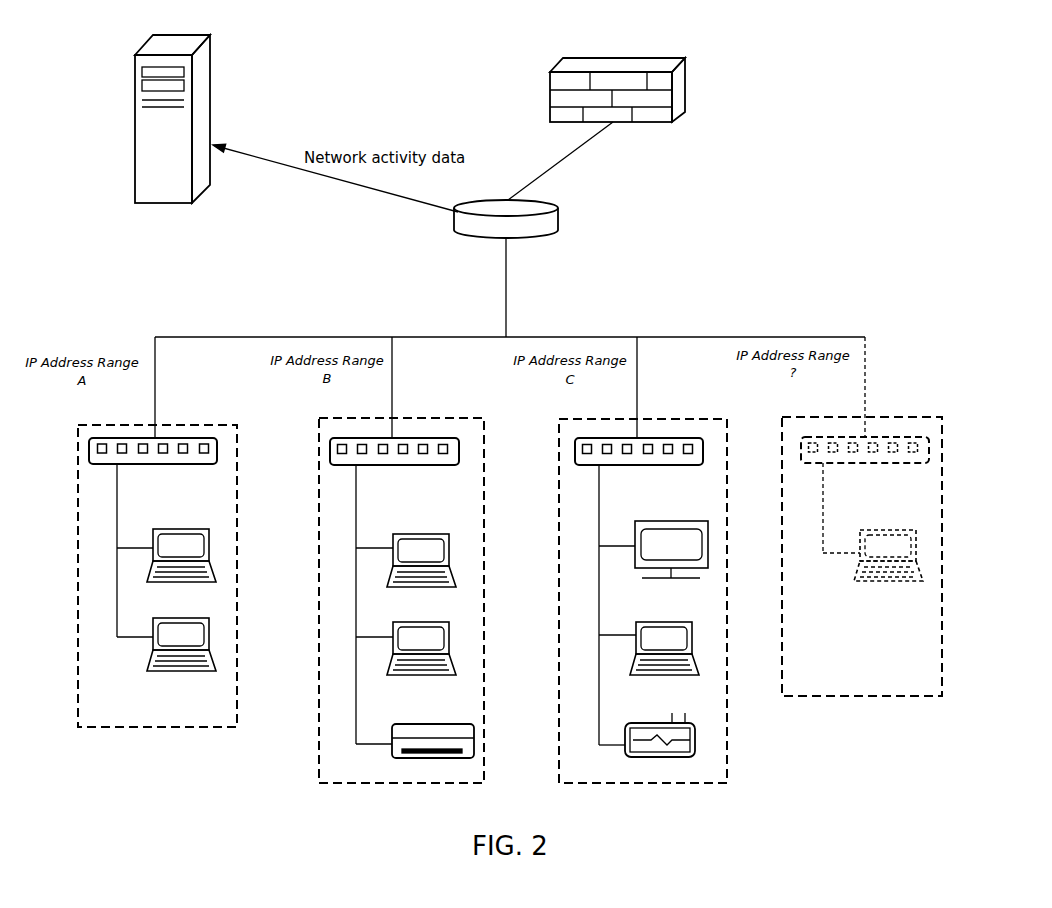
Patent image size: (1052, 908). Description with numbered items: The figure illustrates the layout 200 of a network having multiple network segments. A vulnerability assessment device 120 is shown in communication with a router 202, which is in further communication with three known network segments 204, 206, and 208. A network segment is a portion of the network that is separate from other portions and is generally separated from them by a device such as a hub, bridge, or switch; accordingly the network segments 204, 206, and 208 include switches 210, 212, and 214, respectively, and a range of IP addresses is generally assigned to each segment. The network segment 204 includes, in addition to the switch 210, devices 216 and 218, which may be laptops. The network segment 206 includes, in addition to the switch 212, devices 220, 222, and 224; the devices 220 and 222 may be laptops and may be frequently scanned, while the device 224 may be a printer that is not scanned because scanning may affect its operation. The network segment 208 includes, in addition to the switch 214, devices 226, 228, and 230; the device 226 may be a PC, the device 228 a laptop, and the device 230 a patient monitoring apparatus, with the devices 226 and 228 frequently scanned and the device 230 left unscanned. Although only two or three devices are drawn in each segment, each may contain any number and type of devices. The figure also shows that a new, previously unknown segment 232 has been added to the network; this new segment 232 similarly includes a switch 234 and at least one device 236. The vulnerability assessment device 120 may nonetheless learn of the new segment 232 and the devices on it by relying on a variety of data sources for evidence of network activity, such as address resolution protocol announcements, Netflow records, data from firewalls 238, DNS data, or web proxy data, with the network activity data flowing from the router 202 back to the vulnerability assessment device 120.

The vulnerability assessment device 120 is at (210, 102).
The layout 200 is at (730, 228).
The router 202 is at (550, 198).
The network segment 204 is at (175, 423).
The network segment 206 is at (408, 418).
The network segment 208 is at (652, 418).
The switch 210 is at (218, 443).
The switch 212 is at (452, 438).
The switch 214 is at (692, 438).
The device 216 is at (163, 529).
The device 218 is at (160, 618).
The device 220 is at (408, 534).
The device 222 is at (405, 622).
The device 224 is at (405, 724).
The device 226 is at (653, 521).
The device 228 is at (647, 622).
The device 230 is at (652, 723).
The new segment 232 is at (787, 418).
The switch 234 is at (872, 437).
The device 236 is at (868, 530).
The firewall 238 is at (685, 92).